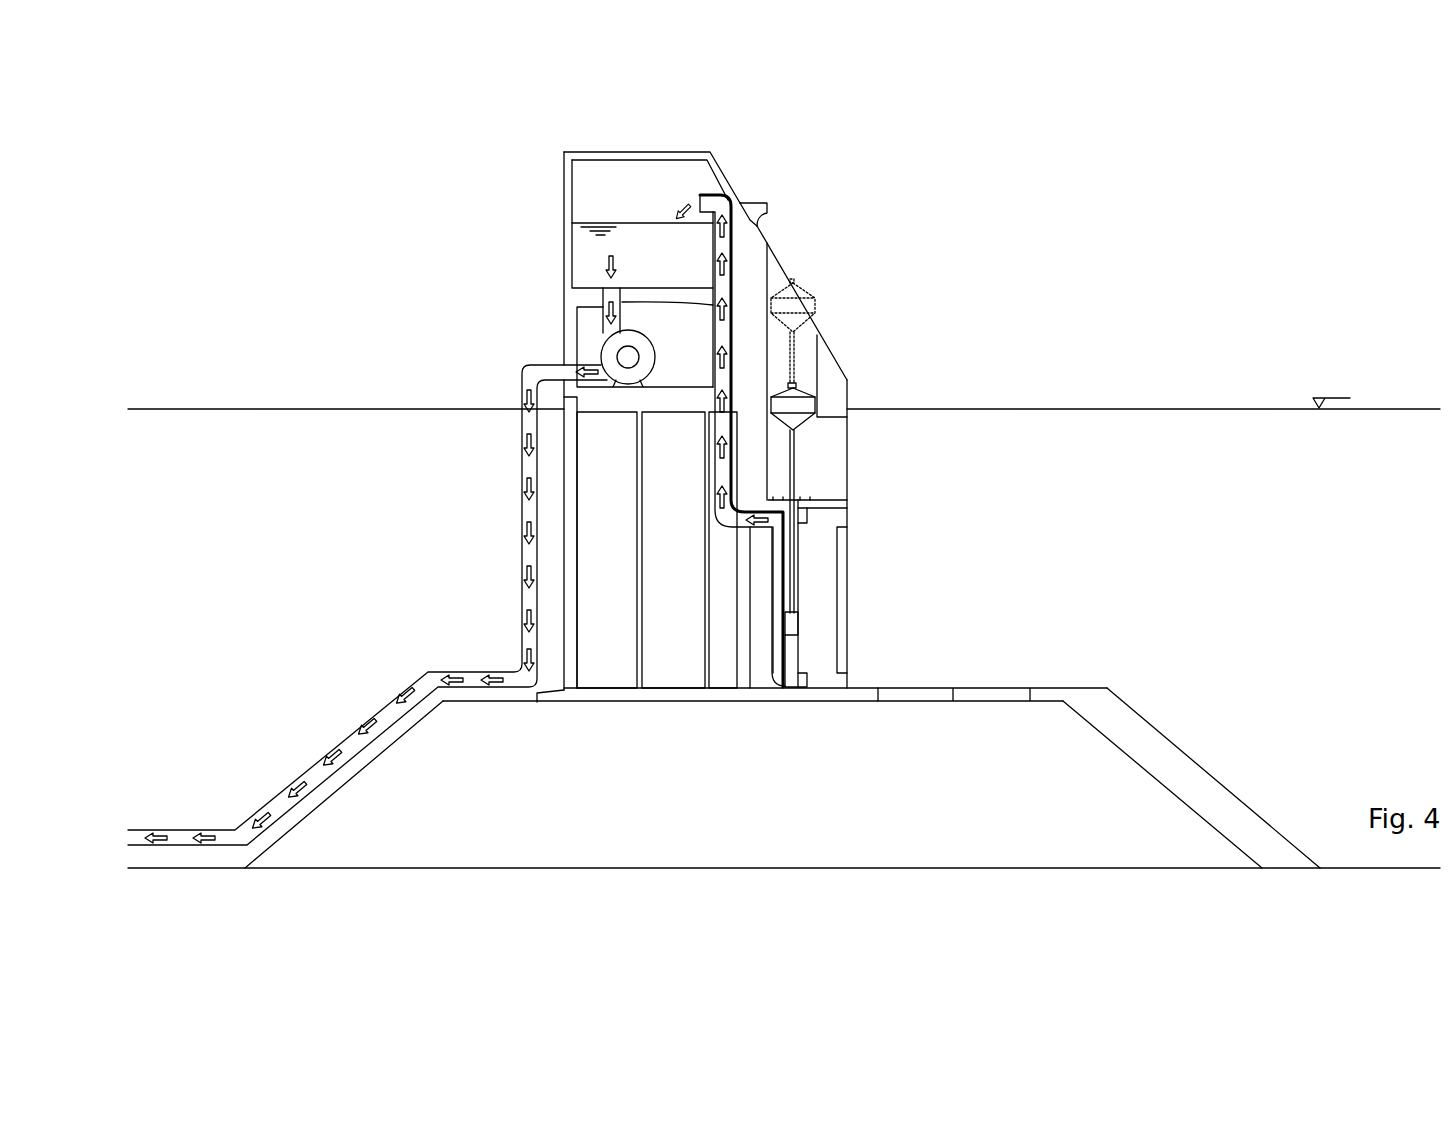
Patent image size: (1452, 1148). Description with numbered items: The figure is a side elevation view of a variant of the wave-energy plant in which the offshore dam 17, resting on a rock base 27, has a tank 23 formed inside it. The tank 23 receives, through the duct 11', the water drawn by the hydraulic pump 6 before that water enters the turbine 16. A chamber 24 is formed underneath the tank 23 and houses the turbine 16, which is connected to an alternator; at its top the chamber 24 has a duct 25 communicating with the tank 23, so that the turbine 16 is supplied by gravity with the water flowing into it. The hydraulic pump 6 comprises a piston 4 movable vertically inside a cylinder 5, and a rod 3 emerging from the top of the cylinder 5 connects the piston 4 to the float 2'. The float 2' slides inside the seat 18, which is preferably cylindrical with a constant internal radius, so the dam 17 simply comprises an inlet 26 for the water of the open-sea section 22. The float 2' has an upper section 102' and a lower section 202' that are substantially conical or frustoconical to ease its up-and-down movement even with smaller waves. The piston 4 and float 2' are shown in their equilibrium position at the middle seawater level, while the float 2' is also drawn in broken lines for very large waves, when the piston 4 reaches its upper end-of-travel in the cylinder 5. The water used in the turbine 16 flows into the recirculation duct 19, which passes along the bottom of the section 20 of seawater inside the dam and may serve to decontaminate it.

The tank 23 is at (630, 172).
The offshore dam 17 is at (748, 218).
The duct 11' is at (781, 441).
The float 2' is at (860, 338).
The seat 18 is at (817, 363).
The upper section 102' is at (862, 368).
The lower section 202' is at (858, 443).
The rod 3 is at (800, 473).
The inlet 26 is at (837, 465).
The duct 25 is at (610, 297).
The chamber 24 is at (588, 327).
The turbine 16 is at (610, 353).
The section of seawater 20 is at (363, 423).
The open-sea section 22 is at (1083, 422).
The recirculation duct 19 is at (470, 676).
The hydraulic pump 6 is at (819, 595).
The piston 4 is at (790, 622).
The cylinder 5 is at (790, 655).
The rock base 27 is at (1103, 772).